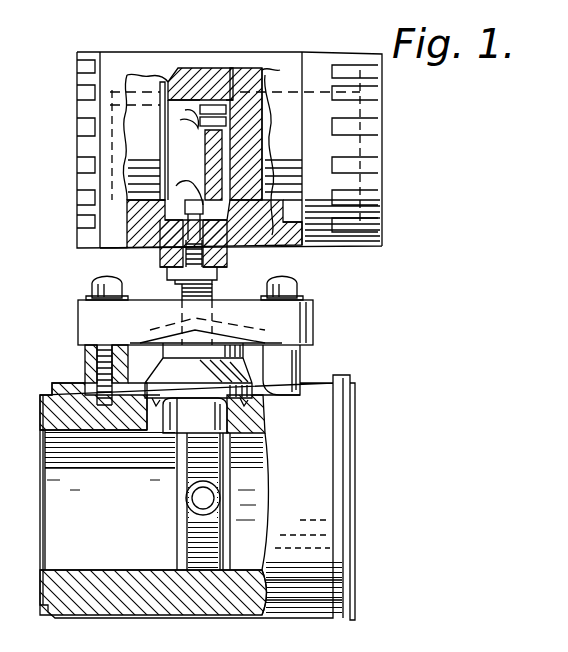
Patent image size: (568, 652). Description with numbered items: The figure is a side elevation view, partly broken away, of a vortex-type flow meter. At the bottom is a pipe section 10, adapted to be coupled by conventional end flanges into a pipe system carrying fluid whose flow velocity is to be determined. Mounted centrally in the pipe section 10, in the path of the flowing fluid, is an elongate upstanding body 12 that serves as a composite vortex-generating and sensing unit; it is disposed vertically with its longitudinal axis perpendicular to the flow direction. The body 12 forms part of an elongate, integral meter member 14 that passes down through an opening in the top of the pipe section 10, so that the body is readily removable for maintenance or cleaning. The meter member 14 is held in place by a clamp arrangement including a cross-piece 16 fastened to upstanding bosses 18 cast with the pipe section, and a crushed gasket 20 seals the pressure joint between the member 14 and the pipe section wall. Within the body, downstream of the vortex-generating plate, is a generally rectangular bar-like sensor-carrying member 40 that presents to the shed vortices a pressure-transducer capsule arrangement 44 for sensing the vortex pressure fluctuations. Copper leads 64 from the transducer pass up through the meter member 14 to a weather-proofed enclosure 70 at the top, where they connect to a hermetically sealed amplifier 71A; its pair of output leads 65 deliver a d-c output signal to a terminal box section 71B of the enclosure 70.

The pipe section 10 is at (323, 380).
The body 12 is at (170, 534).
The meter member 14 is at (240, 290).
The cross-piece 16 is at (312, 320).
The upstanding bosses 18 is at (86, 356).
The crushed gasket 20 is at (158, 406).
The sensor-carrying member 40 is at (236, 528).
The pressure-transducer capsule arrangement 44 is at (210, 468).
The copper leads 64 is at (185, 190).
The output leads 65 is at (195, 118).
The weather-proofed enclosure 70 is at (382, 130).
The hermetically sealed amplifier 71A is at (140, 95).
The terminal box section 71B is at (253, 102).